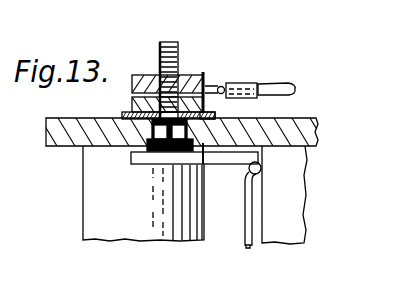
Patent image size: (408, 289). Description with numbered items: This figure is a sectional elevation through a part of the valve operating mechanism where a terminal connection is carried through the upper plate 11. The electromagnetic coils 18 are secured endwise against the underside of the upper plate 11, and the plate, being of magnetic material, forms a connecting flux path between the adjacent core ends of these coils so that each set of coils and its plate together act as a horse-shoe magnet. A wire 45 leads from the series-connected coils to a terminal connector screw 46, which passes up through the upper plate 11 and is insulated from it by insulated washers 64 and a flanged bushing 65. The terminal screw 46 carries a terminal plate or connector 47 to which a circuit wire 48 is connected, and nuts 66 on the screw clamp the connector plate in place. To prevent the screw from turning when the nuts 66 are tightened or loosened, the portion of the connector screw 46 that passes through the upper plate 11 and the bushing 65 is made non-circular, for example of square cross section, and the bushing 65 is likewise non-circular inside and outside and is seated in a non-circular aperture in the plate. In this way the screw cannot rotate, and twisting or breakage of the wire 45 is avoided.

The upper plate 11 is at (316, 121).
The electromagnetic coils 18 is at (195, 195).
The wire 45 is at (241, 228).
The terminal connector screw 46 is at (175, 42).
The terminal plate or connector 47 is at (253, 83).
The circuit wire 48 is at (295, 89).
The insulated washers 64 is at (213, 118).
The flanged bushings 65 is at (122, 116).
The nuts 66 is at (203, 76).